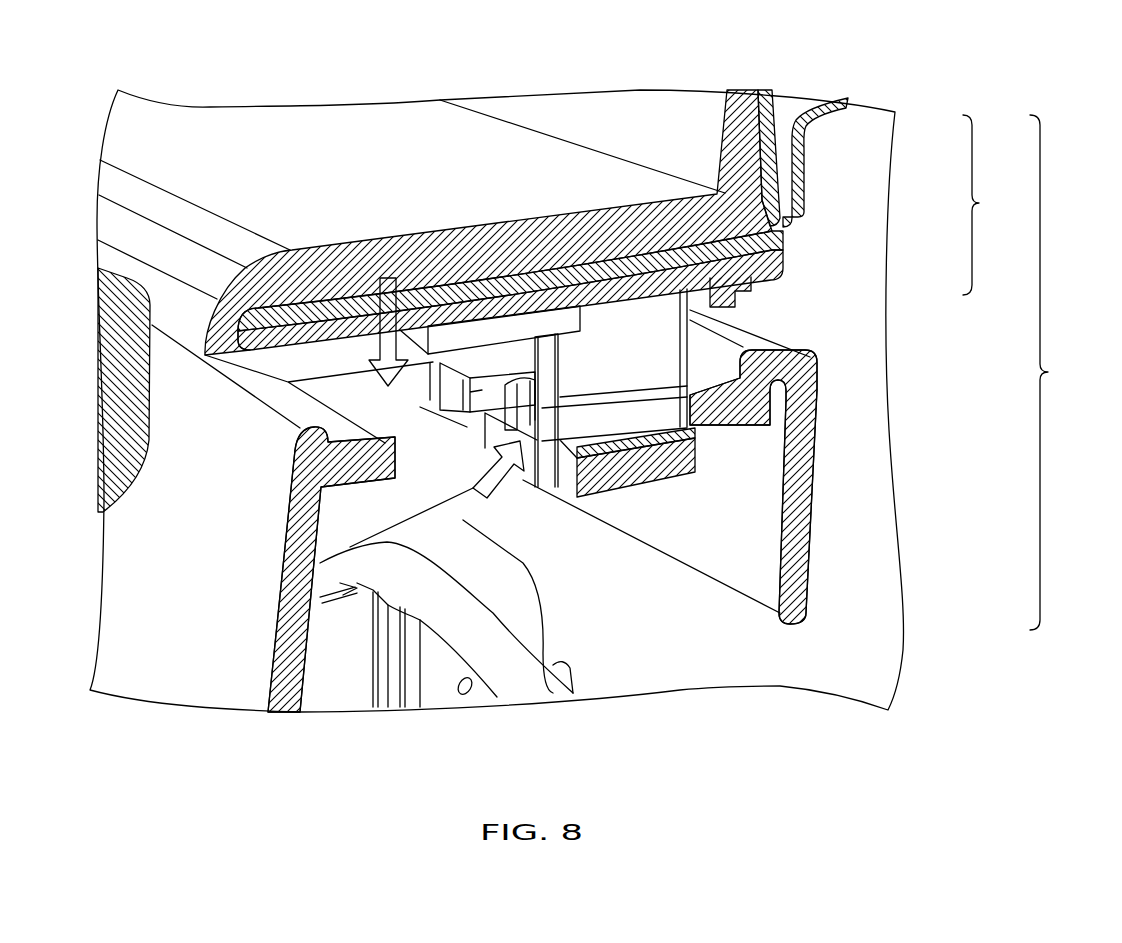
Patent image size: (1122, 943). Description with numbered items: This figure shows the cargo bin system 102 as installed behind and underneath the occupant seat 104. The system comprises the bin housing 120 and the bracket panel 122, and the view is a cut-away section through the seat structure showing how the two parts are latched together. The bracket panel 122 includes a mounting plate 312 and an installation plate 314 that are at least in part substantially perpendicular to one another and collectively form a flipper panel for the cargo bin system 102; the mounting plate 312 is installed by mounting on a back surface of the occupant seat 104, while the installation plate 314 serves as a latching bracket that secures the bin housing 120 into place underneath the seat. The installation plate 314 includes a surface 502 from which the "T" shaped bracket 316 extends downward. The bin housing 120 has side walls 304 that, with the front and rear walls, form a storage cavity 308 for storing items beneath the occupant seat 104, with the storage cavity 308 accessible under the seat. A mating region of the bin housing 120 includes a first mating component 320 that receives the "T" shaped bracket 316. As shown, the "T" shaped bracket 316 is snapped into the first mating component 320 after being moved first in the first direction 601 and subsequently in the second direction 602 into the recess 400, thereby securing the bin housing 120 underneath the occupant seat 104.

The cargo bin system 102 is at (1060, 372).
The occupant seat 104 is at (567, 233).
The bin housing 120 is at (815, 487).
The bracket panel 122 is at (987, 205).
The side walls 304 is at (810, 390).
The storage cavity 308 is at (658, 672).
The mounting plate 312 is at (840, 106).
The installation plate 314 is at (781, 257).
The "T" shaped bracket 316 is at (618, 448).
The first mating component 320 is at (316, 491).
The recess 400 is at (331, 569).
The surface 502 is at (713, 307).
The first direction 601 is at (388, 276).
The second direction 602 is at (468, 512).